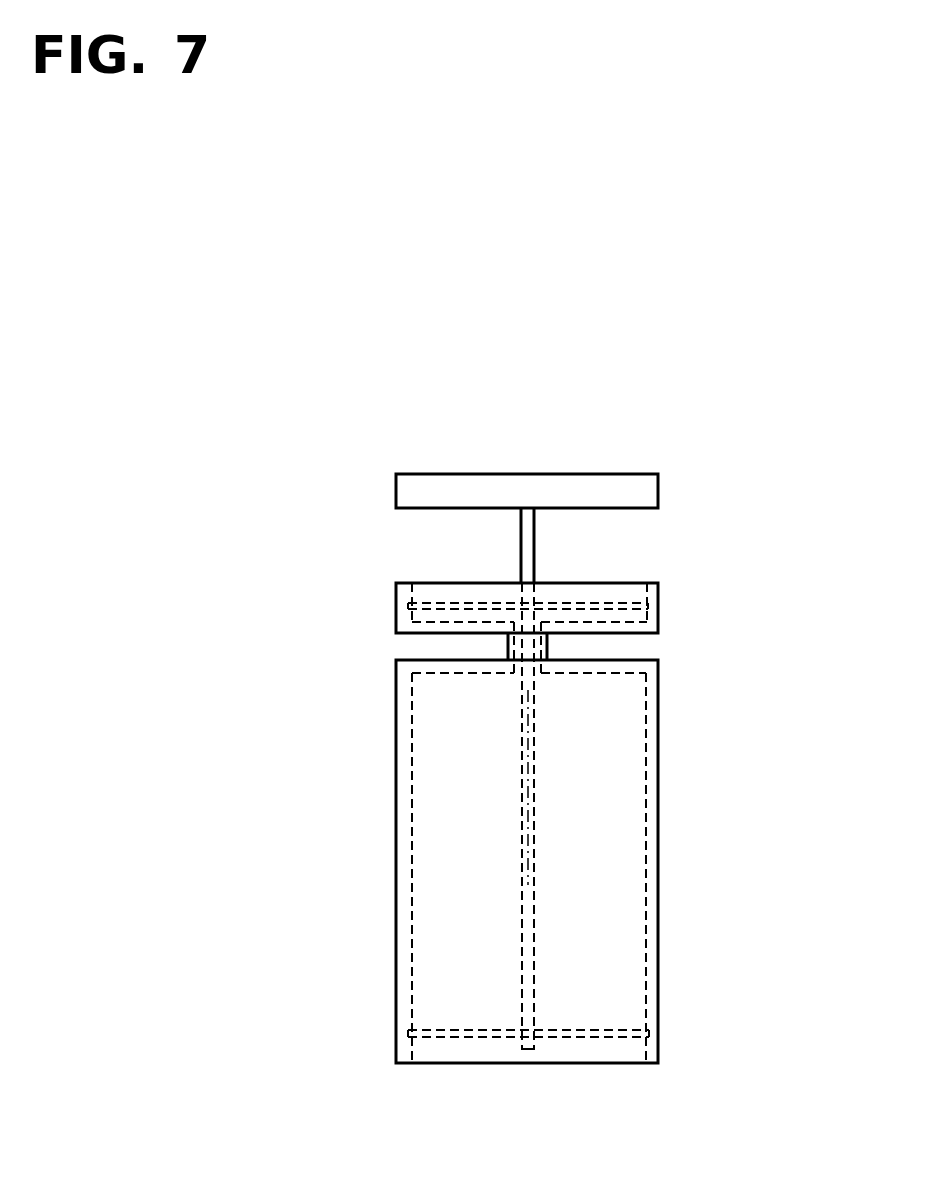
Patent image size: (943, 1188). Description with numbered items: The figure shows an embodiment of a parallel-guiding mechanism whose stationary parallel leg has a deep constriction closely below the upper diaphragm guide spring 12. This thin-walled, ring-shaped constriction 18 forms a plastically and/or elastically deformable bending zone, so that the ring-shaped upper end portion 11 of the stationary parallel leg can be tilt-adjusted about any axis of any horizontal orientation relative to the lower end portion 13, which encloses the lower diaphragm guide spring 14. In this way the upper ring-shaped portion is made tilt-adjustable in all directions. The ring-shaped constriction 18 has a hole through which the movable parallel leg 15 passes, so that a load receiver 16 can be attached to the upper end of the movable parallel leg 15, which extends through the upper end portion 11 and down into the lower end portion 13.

The ring-shaped upper end portion 11 is at (433, 593).
The upper diaphragm guide spring 12 is at (623, 603).
The lower end portion 13 is at (598, 1048).
The lower diaphragm guide spring 14 is at (623, 1032).
The movable parallel leg 15 is at (528, 545).
The load receiver 16 is at (590, 491).
The ring-shaped constriction 18 is at (513, 649).